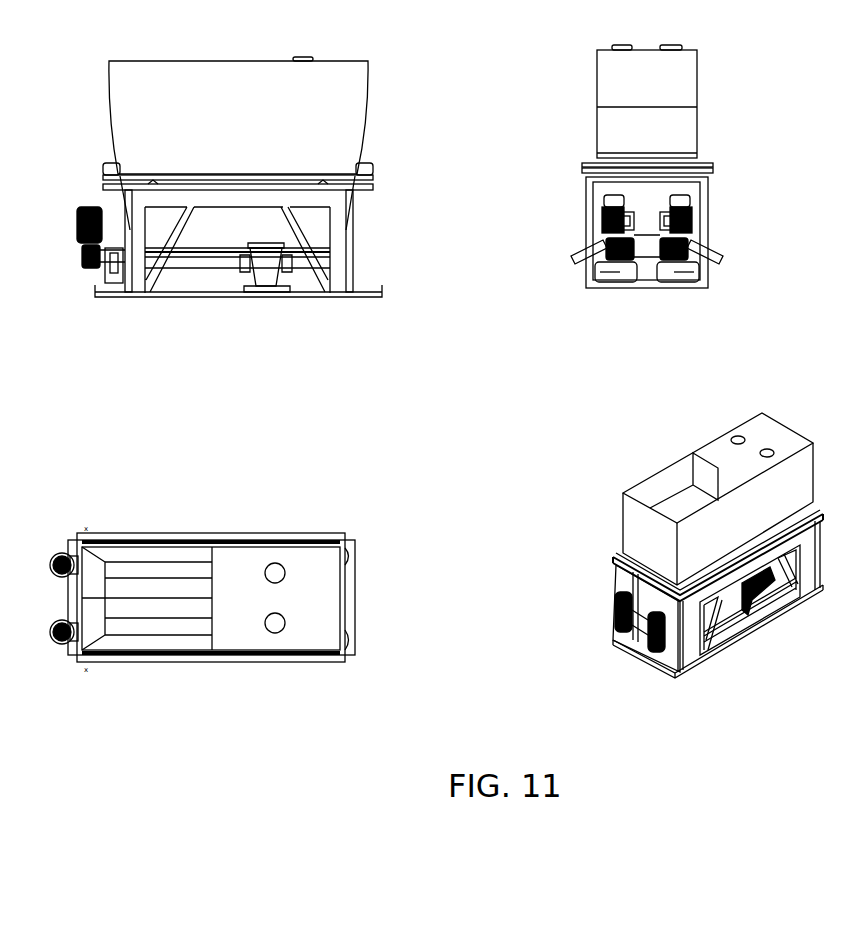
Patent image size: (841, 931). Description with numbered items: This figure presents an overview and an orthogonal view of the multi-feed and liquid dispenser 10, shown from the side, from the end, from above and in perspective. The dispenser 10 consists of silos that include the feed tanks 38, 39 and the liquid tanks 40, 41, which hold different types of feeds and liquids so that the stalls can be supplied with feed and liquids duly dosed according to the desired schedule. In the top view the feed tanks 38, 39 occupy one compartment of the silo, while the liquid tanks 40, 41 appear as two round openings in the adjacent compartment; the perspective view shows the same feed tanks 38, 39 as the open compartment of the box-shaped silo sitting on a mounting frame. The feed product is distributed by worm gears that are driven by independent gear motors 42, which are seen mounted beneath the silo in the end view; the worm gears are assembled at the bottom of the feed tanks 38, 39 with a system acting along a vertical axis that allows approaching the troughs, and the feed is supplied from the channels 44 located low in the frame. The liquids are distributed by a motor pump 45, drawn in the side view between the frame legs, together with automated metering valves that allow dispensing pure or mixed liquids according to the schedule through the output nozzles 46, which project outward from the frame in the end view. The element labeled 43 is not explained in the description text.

The multi-feed and liquid dispenser 10 is at (222, 95).
The feed tank 38 is at (113, 558).
The feed tank 39 is at (170, 637).
The liquid tank 40 is at (278, 565).
The liquid tank 41 is at (272, 633).
The gear motor 42 is at (697, 197).
The motor 43 is at (103, 176).
The channel 44 is at (713, 265).
The motor pump 45 is at (250, 284).
The output nozzle 46 is at (715, 252).